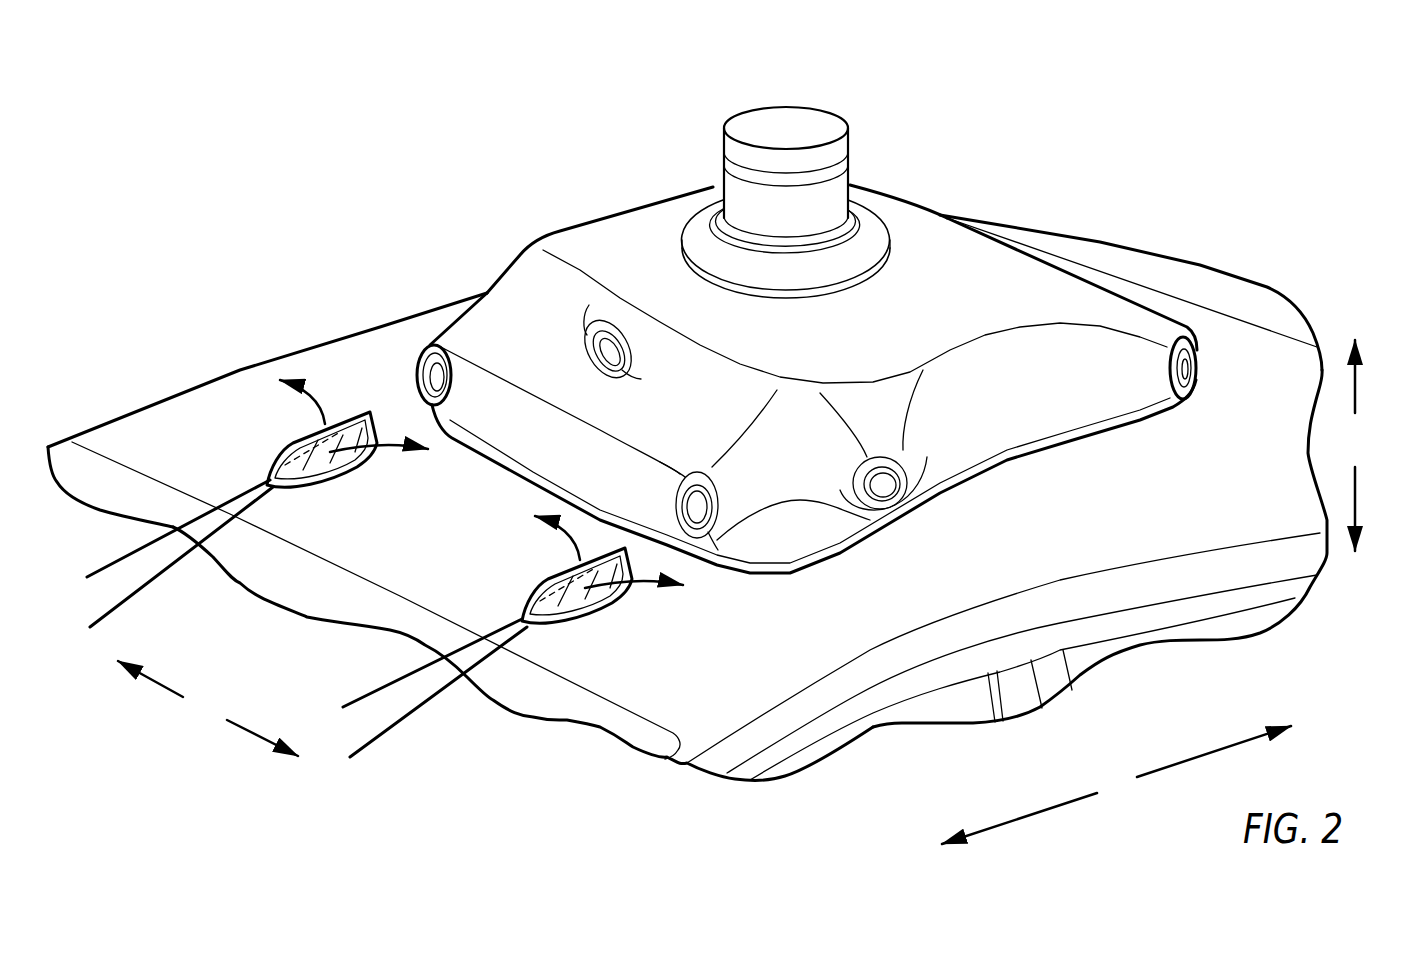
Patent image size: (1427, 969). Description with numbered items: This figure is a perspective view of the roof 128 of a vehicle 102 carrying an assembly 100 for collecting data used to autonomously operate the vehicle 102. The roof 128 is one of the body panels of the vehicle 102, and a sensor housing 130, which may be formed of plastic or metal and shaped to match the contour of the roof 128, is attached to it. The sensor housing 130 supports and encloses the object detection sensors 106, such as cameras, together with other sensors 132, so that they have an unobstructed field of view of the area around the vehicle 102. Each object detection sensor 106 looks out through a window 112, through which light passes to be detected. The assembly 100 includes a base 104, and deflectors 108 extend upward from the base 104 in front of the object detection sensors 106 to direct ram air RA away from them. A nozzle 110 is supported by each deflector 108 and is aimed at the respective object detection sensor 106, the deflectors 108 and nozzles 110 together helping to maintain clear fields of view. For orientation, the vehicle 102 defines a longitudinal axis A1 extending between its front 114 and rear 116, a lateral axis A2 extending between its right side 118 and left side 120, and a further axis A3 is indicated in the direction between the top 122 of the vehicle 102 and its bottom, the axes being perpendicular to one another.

The assembly 100 is at (262, 220).
The vehicle 102 is at (92, 467).
The base 104 is at (153, 430).
The object detection sensor 106 is at (420, 372).
The deflector 108 is at (340, 480).
The nozzle 110 is at (373, 411).
The window 112 is at (443, 407).
The front 114 is at (168, 767).
The rear 116 is at (1421, 417).
The right side 118 is at (207, 380).
The left side 120 is at (857, 695).
The top 122 is at (1133, 290).
The roof 128 is at (1085, 515).
The sensor housing 130 is at (928, 240).
The sensor 132 is at (763, 125).
The ram air RA is at (133, 597).
The longitudinal axis A1 is at (1116, 785).
The lateral axis A2 is at (208, 708).
The third axis A3 is at (1357, 445).